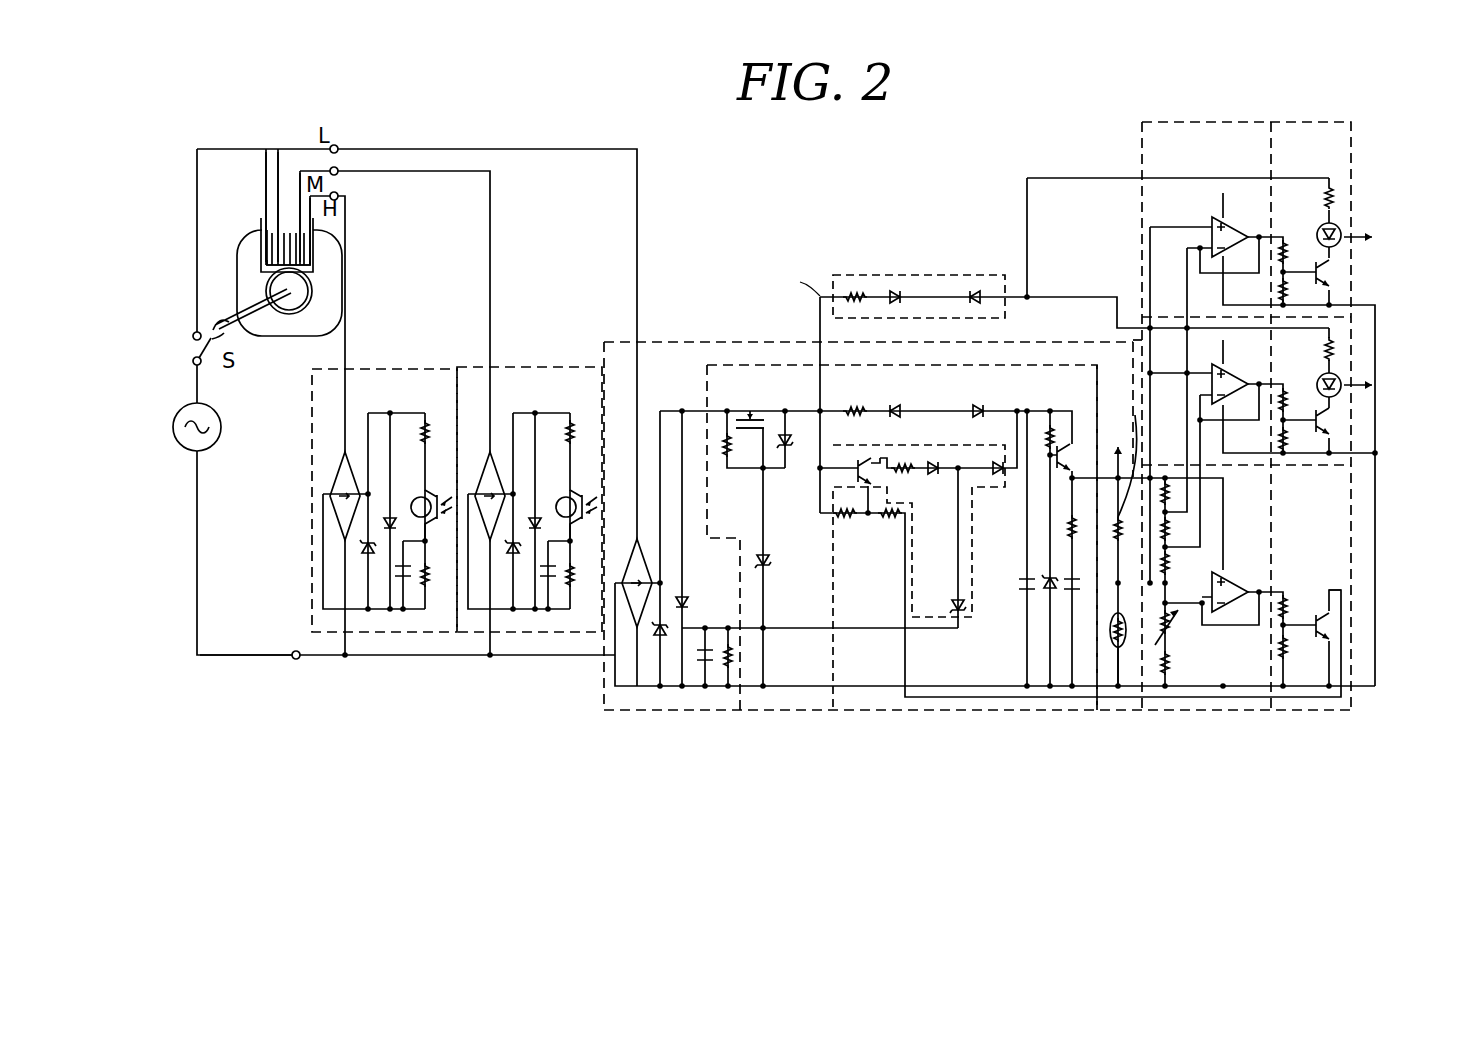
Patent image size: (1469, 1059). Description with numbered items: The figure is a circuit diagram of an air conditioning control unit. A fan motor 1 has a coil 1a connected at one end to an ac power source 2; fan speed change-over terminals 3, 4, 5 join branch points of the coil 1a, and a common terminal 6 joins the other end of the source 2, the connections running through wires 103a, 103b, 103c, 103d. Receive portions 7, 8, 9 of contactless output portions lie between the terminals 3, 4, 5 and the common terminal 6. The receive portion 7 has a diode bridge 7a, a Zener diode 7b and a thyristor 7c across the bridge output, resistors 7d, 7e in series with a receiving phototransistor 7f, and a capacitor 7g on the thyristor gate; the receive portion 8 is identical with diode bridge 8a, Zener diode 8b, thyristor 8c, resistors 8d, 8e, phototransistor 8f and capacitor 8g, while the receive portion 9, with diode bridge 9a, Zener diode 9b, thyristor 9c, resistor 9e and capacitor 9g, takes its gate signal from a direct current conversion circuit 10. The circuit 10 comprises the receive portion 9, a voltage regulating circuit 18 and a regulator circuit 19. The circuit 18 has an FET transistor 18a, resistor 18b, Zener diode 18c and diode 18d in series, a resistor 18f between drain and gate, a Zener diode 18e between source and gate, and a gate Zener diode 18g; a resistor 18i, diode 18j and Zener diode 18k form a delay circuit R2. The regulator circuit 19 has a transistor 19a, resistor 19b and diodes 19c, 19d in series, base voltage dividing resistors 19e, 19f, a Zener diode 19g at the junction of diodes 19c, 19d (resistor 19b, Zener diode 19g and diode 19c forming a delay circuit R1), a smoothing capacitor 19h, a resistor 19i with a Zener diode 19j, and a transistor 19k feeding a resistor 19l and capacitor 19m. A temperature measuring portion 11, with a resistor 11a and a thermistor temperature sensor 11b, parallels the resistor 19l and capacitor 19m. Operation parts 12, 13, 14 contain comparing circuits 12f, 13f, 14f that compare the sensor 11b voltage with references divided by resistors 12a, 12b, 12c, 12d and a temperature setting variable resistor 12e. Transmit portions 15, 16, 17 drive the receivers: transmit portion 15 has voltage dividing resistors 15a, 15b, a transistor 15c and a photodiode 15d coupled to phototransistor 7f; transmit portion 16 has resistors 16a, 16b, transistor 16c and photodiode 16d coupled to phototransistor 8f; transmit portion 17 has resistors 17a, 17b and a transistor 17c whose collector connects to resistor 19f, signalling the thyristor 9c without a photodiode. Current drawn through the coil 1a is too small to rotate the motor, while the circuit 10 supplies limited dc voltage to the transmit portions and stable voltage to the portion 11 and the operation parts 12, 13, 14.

The fan motor 1 is at (239, 257).
The coil 1a is at (266, 258).
The ac power source 2 is at (190, 414).
The fan speed change-over terminal 3 is at (340, 146).
The fan speed change-over terminal 4 is at (340, 173).
The fan speed change-over terminal 5 is at (340, 198).
The common terminal 6 is at (297, 660).
The wire 103a is at (274, 157).
The lead wire 103b is at (300, 181).
The lead wire 103c is at (310, 207).
The wire 103d is at (208, 660).
The receive portion of contactless output portion 7 is at (386, 505).
The diode bridge 7a is at (344, 470).
The Zener diode 7b is at (366, 560).
The thyristor 7c is at (393, 515).
The resistor 7d is at (428, 421).
The resistor 7e is at (427, 576).
The receiving phototransistor 7f is at (435, 496).
The capacitor 7g is at (412, 590).
The receive portion of contactless output portion 8 is at (530, 505).
The diode bridge 8a is at (489, 477).
The Zener diode 8b is at (511, 560).
The thyristor 8c is at (538, 517).
The resistor 8d is at (574, 424).
The resistor 8e is at (571, 580).
The receiving phototransistor 8f is at (582, 490).
The capacitor 8g is at (554, 590).
The receive portion of contactless output portion 9 is at (989, 523).
The diode bridge 9a is at (632, 558).
The Zener diode 9b is at (660, 638).
The thyristor 9c is at (686, 599).
The resistor 9e is at (726, 648).
The capacitor 9g is at (714, 666).
The direct current conversion circuit 10 is at (803, 340).
The temperature measuring portion 11 is at (1147, 559).
The resistor 11a is at (1118, 452).
The temperature sensor 11b is at (1115, 646).
The operation part 12 is at (1201, 416).
The voltage dividing resistor 12a is at (1176, 502).
The voltage dividing resistor 12b is at (1176, 536).
The voltage dividing resistor 12c is at (1169, 553).
The voltage dividing resistor 12d is at (1172, 658).
The temperature setting variable resistor 12e is at (1172, 626).
The comparing circuit 12f is at (1238, 222).
The operation part 13 is at (1235, 356).
The comparing circuit 13f is at (1241, 378).
The operation part 14 is at (1224, 646).
The comparing circuit 14f is at (1240, 580).
The transmit portion of contactless output portion 15 is at (1344, 225).
The voltage dividing resistor 15a is at (1284, 240).
The voltage dividing resistor 15b is at (1295, 296).
The transistor 15c is at (1332, 274).
The photodiode 15d is at (1340, 231).
The transmit portion of contactless output portion 16 is at (1344, 383).
The voltage dividing resistor 16a is at (1284, 387).
The voltage dividing resistor 16b is at (1302, 443).
The transistor 16c is at (1332, 422).
The photodiode 16d is at (1344, 378).
The transmit portion of contactless output portion 17 is at (1308, 641).
The voltage dividing resistor 17a is at (1288, 600).
The voltage dividing resistor 17b is at (1286, 644).
The transistor 17c is at (1316, 615).
The voltage regulating circuit 18 is at (1018, 444).
The FET transistor 18a is at (750, 416).
The resistor 18b is at (859, 408).
The Zener diode 18c is at (894, 406).
The diode 18d is at (977, 406).
The Zener diode 18e is at (787, 454).
The resistor 18f is at (726, 432).
The Zener diode 18g is at (763, 554).
The resistor 18i is at (854, 292).
The diode 18j is at (895, 291).
The Zener diode 18k is at (975, 291).
The regulator circuit 19 is at (1080, 564).
The transistor 19a is at (863, 465).
The resistor 19b is at (904, 474).
The diode 19c is at (939, 474).
The diode 19d is at (1000, 476).
The voltage dividing resistor 19e is at (846, 518).
The voltage dividing resistor 19f is at (890, 522).
The Zener diode 19g is at (952, 605).
The capacitor 19h is at (1028, 594).
The resistor 19i is at (1050, 426).
The Zener diode 19j is at (1040, 569).
The transistor 19k is at (1057, 447).
The resistor 19l is at (1066, 536).
The capacitor 19m is at (1066, 588).
The delay circuit R1 is at (958, 446).
The delay circuit R2 is at (934, 275).